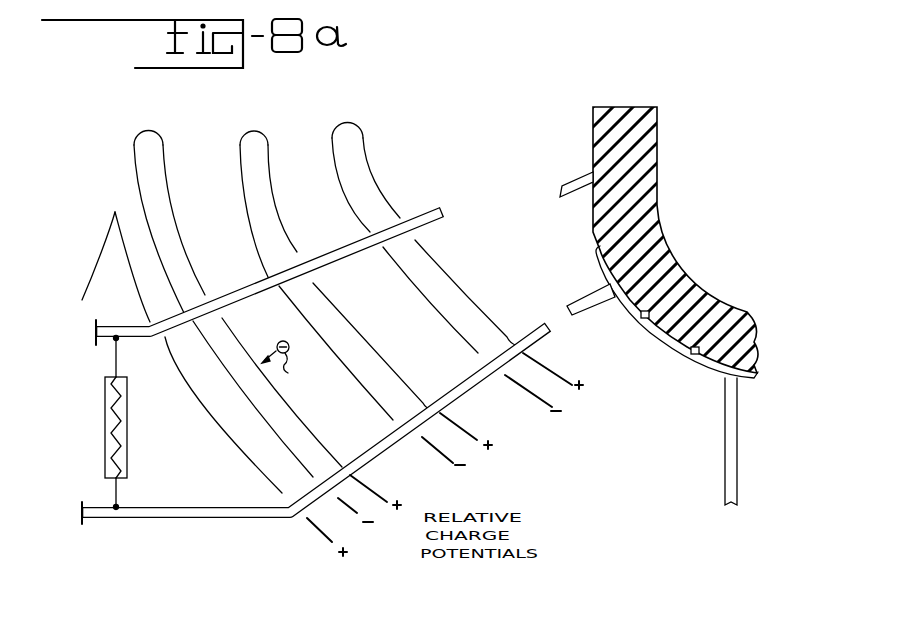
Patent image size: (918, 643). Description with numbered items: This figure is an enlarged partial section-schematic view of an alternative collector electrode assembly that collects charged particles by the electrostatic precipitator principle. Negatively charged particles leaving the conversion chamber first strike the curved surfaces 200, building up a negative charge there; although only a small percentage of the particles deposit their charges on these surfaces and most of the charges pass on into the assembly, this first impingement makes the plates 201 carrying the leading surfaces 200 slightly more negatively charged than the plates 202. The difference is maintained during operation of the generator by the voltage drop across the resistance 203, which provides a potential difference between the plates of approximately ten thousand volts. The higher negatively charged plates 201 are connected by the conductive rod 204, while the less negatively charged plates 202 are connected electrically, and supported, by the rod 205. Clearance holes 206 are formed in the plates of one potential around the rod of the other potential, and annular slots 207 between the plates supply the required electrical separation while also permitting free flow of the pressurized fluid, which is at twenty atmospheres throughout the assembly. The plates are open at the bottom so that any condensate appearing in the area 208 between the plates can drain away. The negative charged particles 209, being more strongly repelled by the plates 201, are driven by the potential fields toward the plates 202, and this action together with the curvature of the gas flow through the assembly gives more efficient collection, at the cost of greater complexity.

The curved surfaces 200 is at (244, 133).
The plates 201 is at (136, 170).
The plates 202 is at (382, 180).
The resistance 203 is at (105, 425).
The conductive rod 204 is at (94, 333).
The rod 205 is at (80, 515).
The clearance holes 206 is at (417, 238).
The annular slots 207 is at (370, 148).
The area 208 is at (335, 337).
The negative charged particles 209 is at (293, 366).